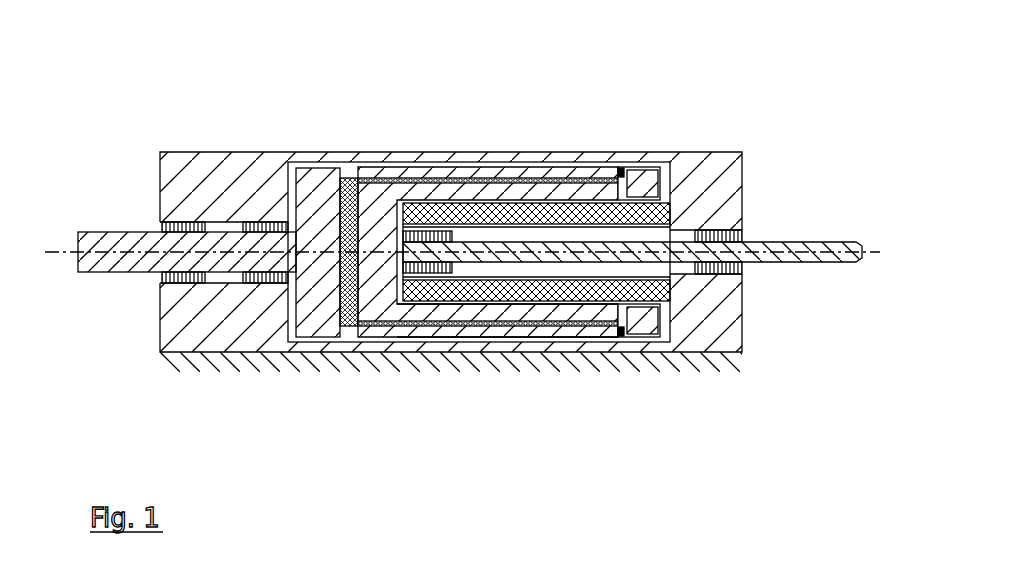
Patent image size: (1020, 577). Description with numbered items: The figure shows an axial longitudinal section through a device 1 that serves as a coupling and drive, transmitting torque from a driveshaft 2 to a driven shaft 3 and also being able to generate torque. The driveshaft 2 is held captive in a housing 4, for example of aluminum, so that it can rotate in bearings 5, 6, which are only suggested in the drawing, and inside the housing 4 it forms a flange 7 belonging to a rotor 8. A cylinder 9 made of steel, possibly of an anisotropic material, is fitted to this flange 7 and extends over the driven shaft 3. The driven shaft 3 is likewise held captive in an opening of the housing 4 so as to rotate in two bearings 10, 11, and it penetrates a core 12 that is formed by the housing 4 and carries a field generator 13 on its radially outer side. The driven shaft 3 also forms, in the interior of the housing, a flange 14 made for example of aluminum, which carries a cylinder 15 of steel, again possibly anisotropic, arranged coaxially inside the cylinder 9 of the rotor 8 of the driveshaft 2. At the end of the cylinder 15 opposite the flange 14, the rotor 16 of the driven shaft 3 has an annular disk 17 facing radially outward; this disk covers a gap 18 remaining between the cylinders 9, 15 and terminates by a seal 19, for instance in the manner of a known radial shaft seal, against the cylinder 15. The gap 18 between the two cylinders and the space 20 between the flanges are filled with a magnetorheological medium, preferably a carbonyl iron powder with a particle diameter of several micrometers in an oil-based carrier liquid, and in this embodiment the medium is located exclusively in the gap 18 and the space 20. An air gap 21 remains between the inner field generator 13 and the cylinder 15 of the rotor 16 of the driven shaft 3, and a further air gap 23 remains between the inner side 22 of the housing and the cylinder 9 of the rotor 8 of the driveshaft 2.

The device 1 is at (142, 123).
The driveshaft 2 is at (120, 242).
The driven shaft 3 is at (795, 243).
The housing 4 is at (515, 152).
The bearing 5 is at (165, 282).
The bearing 6 is at (257, 283).
The flange 7 is at (304, 212).
The rotor 8 is at (318, 338).
The cylinder 9 is at (586, 328).
The bearing 10 is at (443, 267).
The bearing 11 is at (730, 233).
The core 12 is at (482, 215).
The field generator 13 is at (595, 203).
The flange 14 is at (370, 180).
The cylinder 15 is at (423, 190).
The rotor 16 is at (375, 327).
The annular disk 17 is at (647, 180).
The gap 18 is at (529, 312).
The seal 19 is at (621, 170).
The space 20 is at (340, 288).
The air gap 21 is at (490, 290).
The inner side 22 is at (634, 310).
The air gap 23 is at (342, 185).